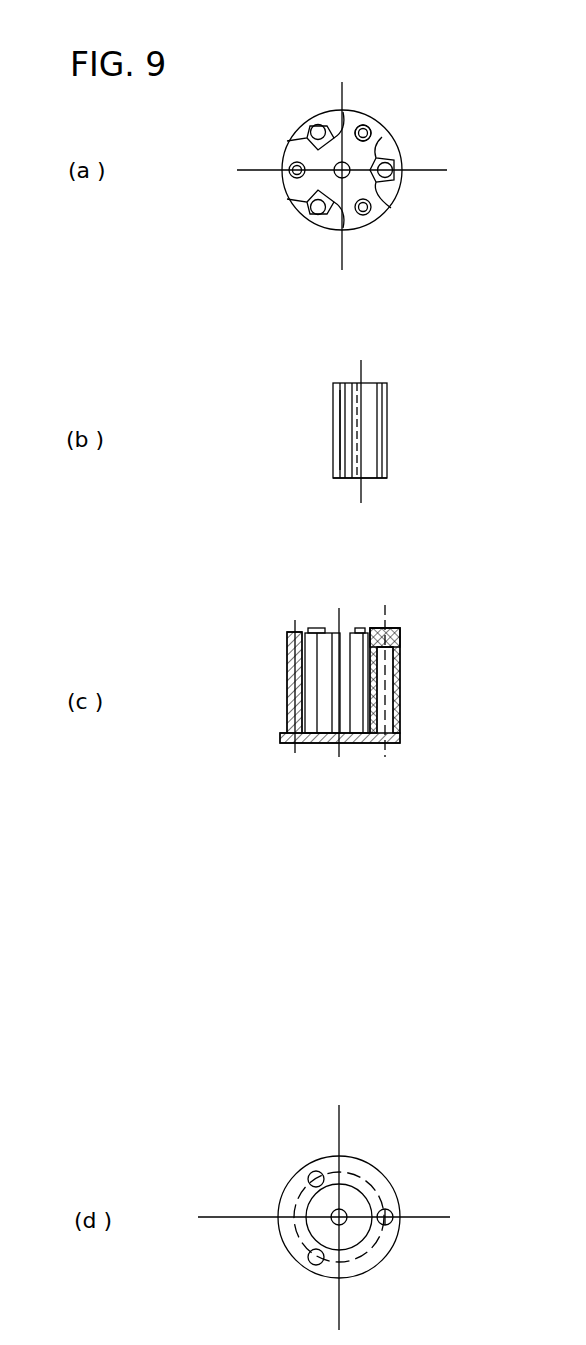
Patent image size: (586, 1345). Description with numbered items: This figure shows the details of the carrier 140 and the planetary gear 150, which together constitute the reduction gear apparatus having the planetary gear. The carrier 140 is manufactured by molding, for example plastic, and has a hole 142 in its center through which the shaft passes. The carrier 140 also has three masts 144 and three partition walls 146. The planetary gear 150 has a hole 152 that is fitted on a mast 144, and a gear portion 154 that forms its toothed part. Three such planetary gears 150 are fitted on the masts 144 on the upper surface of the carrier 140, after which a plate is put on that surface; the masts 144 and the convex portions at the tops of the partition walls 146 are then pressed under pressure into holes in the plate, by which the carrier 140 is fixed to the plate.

The carrier 140 is at (382, 140).
The hole 142 is at (338, 172).
The mast 144 is at (363, 126).
The partition wall 146 is at (393, 183).
The planetary gear 150 is at (377, 412).
The hole 152 is at (367, 463).
The gear portion 154 is at (342, 413).